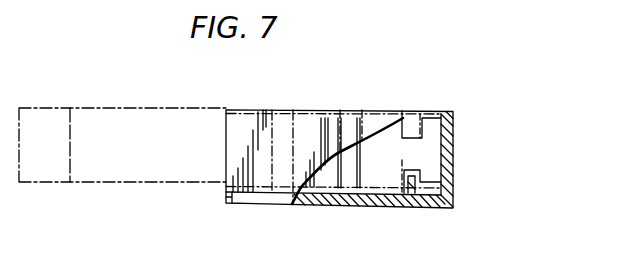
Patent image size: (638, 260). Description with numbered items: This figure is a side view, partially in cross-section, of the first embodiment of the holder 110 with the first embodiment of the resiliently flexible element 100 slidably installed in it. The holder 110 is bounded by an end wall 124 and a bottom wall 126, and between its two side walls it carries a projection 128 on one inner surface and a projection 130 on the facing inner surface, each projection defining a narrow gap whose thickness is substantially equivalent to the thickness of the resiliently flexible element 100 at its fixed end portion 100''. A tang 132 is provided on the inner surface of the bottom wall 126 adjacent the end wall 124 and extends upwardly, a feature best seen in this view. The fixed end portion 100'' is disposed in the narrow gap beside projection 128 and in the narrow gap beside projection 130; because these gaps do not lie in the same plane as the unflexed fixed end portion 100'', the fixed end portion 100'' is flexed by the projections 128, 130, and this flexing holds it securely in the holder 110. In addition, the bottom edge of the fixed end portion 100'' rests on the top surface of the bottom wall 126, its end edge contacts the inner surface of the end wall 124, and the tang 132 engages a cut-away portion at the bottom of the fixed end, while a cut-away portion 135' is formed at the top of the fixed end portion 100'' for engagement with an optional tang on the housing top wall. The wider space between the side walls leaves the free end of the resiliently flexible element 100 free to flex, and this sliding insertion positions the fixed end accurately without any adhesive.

The resiliently flexible element 100 is at (122, 162).
The fixed end portion 100'' is at (337, 137).
The holder 110 is at (380, 214).
The end wall 124 is at (463, 130).
The bottom wall 126 is at (355, 208).
The projection 128 is at (353, 112).
The projection 130 is at (286, 109).
The tang 132 is at (420, 179).
The cut-away portion 135' is at (246, 251).